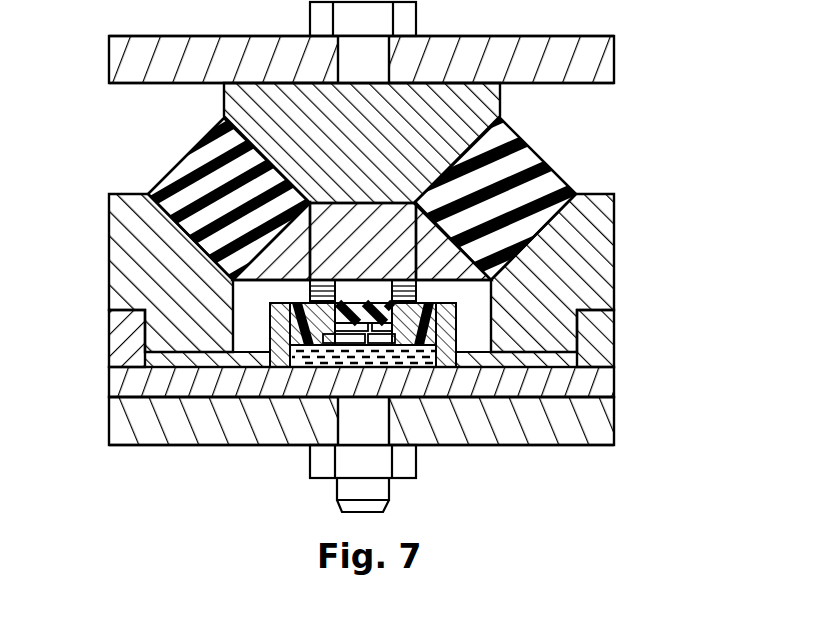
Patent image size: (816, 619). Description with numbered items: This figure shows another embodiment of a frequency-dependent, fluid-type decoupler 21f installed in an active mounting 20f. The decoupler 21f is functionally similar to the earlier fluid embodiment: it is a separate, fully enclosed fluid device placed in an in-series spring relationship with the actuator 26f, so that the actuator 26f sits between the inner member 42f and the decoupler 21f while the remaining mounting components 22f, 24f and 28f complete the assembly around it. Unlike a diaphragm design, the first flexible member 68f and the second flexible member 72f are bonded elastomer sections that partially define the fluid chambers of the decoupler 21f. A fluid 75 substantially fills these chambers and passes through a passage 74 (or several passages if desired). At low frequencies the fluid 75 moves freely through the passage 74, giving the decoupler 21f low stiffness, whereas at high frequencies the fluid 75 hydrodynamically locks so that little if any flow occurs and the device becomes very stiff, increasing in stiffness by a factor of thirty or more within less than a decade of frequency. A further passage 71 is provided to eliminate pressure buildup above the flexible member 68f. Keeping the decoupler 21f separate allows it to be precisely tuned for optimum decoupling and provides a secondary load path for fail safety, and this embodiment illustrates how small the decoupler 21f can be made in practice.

The actuator assembly body 20f is at (185, 469).
The fluid-type decoupler 21f is at (303, 371).
The top plate 22f is at (614, 58).
The bottom plate 24f is at (614, 413).
The central block 26f is at (390, 203).
The right piezoelectric wedge 28f is at (541, 157).
The left piezoelectric wedge 42f is at (223, 117).
The first flexible member 68f is at (347, 303).
The passage 71 is at (325, 289).
The second flexible member 72f is at (420, 303).
The passage 74 is at (372, 354).
The fluid 75 is at (420, 352).